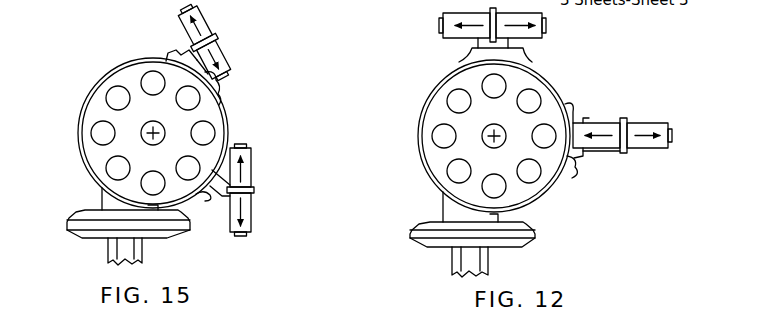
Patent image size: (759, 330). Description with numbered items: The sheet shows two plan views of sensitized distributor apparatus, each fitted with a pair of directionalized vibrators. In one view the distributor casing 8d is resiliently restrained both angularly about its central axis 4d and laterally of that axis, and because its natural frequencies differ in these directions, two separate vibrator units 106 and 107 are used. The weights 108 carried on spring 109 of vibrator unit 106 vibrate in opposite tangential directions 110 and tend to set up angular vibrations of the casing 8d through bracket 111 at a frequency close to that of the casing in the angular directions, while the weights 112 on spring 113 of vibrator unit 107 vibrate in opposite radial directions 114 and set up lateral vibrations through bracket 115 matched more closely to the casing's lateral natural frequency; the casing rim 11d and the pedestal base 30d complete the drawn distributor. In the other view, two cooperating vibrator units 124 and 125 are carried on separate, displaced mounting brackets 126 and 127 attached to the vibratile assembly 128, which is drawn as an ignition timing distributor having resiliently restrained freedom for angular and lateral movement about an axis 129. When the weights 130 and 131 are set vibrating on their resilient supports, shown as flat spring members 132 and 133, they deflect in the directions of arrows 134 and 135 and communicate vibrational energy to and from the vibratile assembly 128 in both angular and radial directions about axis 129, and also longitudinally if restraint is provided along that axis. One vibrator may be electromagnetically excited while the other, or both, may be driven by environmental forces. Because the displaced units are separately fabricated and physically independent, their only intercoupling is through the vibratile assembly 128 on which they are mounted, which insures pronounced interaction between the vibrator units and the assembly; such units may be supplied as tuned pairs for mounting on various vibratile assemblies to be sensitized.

In FIG. 15, the vibrator unit 124 is at (137, 30).
In FIG. 15, the vibrator unit 125 is at (266, 240).
In FIG. 15, the mounting bracket 126 is at (187, 53).
In FIG. 15, the mounting bracket 127 is at (226, 194).
In FIG. 15, the vibratile assembly 128 is at (110, 83).
In FIG. 15, the axis 129 is at (150, 135).
In FIG. 15, the weight 130 is at (210, 30).
In FIG. 15, the weight 131 is at (250, 212).
In FIG. 15, the flat spring member 132 is at (212, 43).
In FIG. 15, the flat spring member 133 is at (256, 190).
In FIG. 15, the arrows 134 is at (228, 58).
In FIG. 15, the arrows 135 is at (250, 172).
In FIG. 12, the vibrator unit 106 is at (558, 33).
In FIG. 12, the vibrator unit 107 is at (625, 160).
In FIG. 12, the weights 108 is at (454, 33).
In FIG. 12, the spring 109 is at (518, 34).
In FIG. 12, the tangential directions 110 is at (444, 20).
In FIG. 12, the bracket 111 is at (456, 62).
In FIG. 12, the weights 112 is at (603, 123).
In FIG. 12, the spring 113 is at (641, 125).
In FIG. 12, the radial directions 114 is at (617, 152).
In FIG. 12, the bracket 115 is at (570, 172).
In FIG. 12, the disc rim 11d is at (428, 117).
In FIG. 12, the central axis 4d is at (489, 140).
In FIG. 12, the distributor casing 8d is at (427, 168).
In FIG. 12, the pedestal base 30d is at (508, 242).